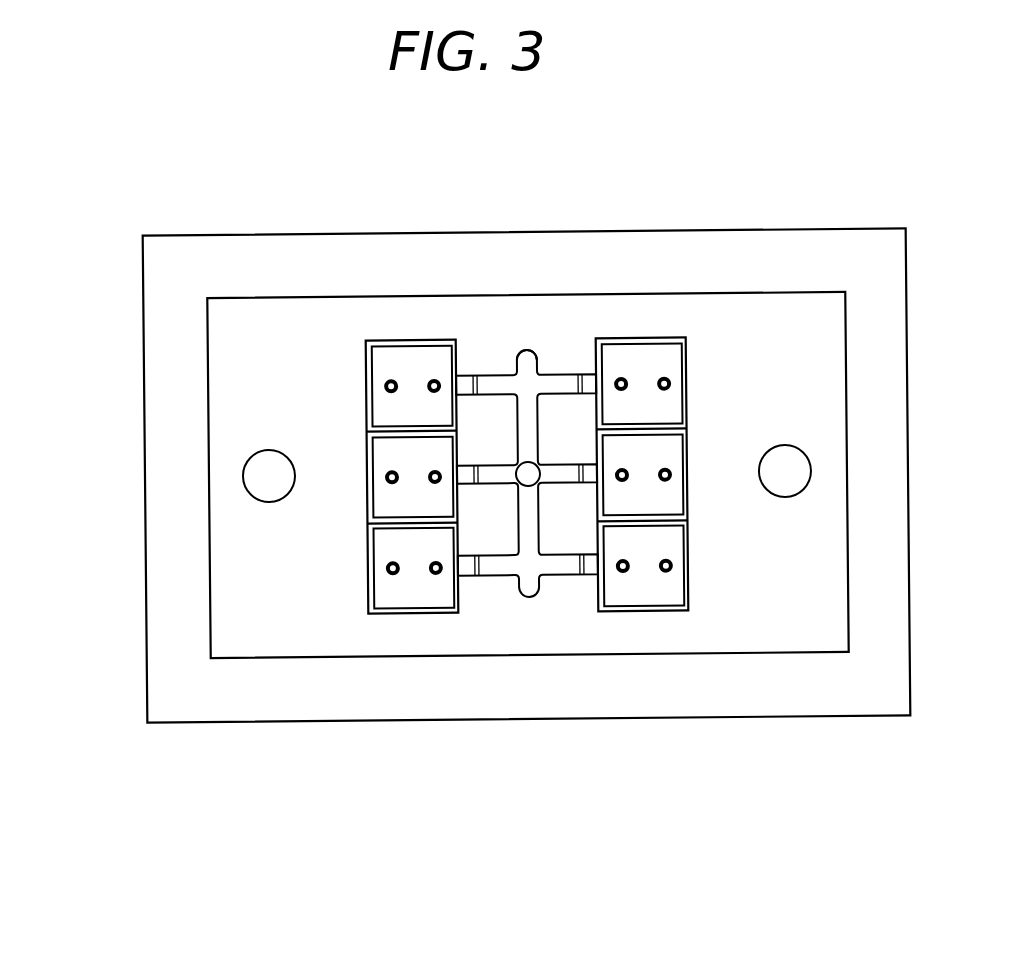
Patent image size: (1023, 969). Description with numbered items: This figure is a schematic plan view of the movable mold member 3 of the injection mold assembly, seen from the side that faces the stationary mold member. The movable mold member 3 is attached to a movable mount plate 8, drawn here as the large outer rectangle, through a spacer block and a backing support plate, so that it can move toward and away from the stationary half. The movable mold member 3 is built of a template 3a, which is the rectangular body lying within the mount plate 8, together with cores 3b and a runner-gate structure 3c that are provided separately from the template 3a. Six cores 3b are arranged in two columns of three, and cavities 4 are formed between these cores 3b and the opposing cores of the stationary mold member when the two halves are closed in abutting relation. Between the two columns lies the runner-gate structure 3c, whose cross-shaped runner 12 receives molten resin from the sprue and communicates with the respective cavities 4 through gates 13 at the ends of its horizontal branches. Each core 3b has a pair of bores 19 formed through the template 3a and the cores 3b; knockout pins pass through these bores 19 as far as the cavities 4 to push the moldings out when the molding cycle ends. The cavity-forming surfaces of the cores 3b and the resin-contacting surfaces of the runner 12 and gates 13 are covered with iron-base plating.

The movable mold member 3 is at (381, 289).
The template 3a is at (813, 643).
The cores 3b is at (368, 348).
The runner-gate structure 3c is at (531, 358).
The cavities 4 is at (389, 360).
The movable mount plate 8 is at (193, 705).
The runner 12 is at (530, 547).
The gates 13 is at (468, 473).
The bores 19 is at (622, 380).